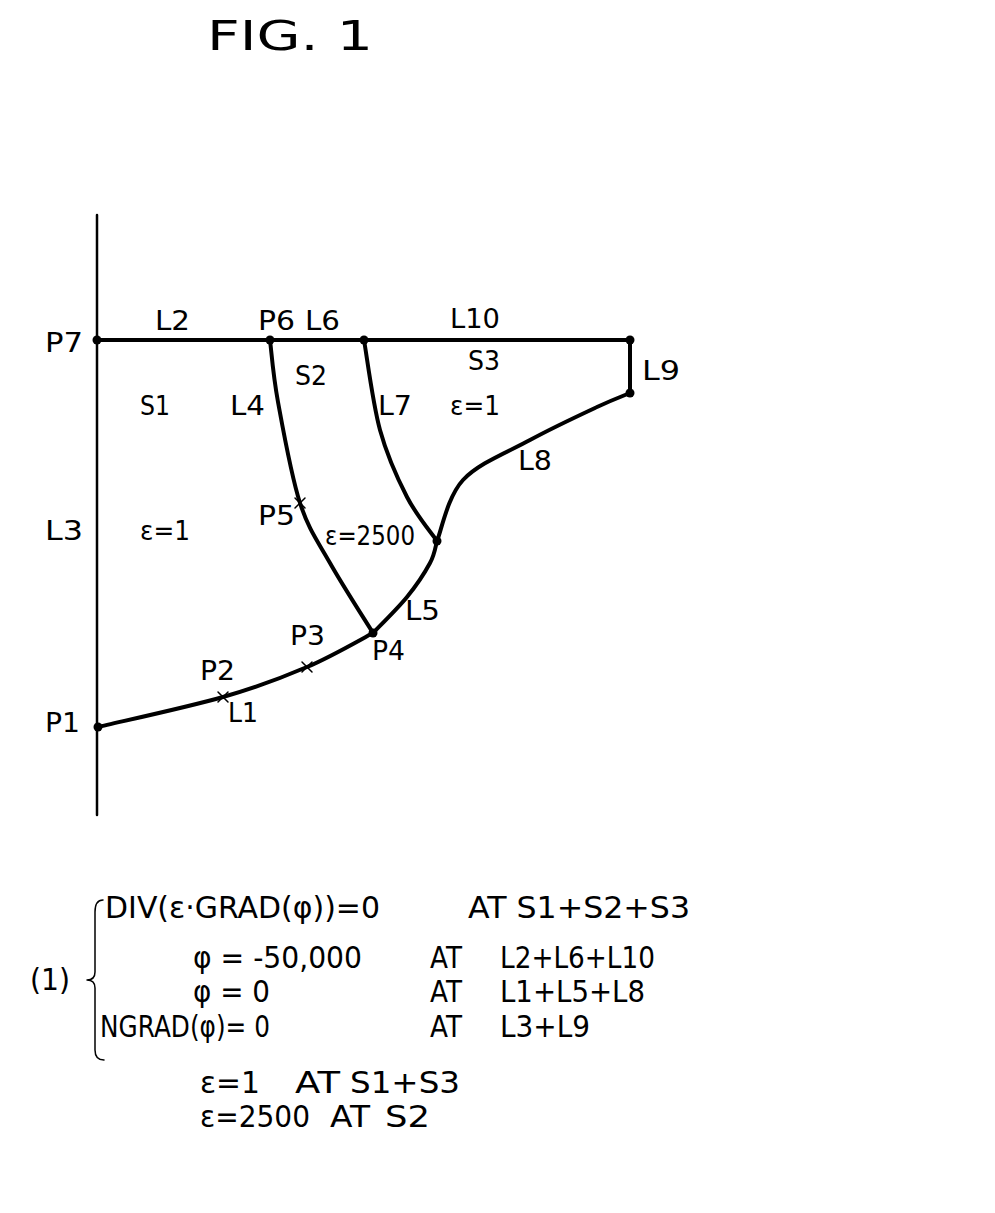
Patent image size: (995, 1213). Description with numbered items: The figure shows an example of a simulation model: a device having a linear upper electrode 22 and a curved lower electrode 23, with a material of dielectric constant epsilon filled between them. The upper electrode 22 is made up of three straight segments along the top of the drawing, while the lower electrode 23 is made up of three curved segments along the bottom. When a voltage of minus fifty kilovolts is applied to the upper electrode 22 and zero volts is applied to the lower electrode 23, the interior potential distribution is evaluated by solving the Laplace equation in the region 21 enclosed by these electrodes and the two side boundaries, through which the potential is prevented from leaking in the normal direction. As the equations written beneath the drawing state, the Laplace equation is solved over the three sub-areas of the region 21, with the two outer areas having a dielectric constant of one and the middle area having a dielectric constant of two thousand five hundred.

The region 21 is at (605, 355).
The upper electrode 22 is at (393, 340).
The lower electrode 23 is at (457, 500).